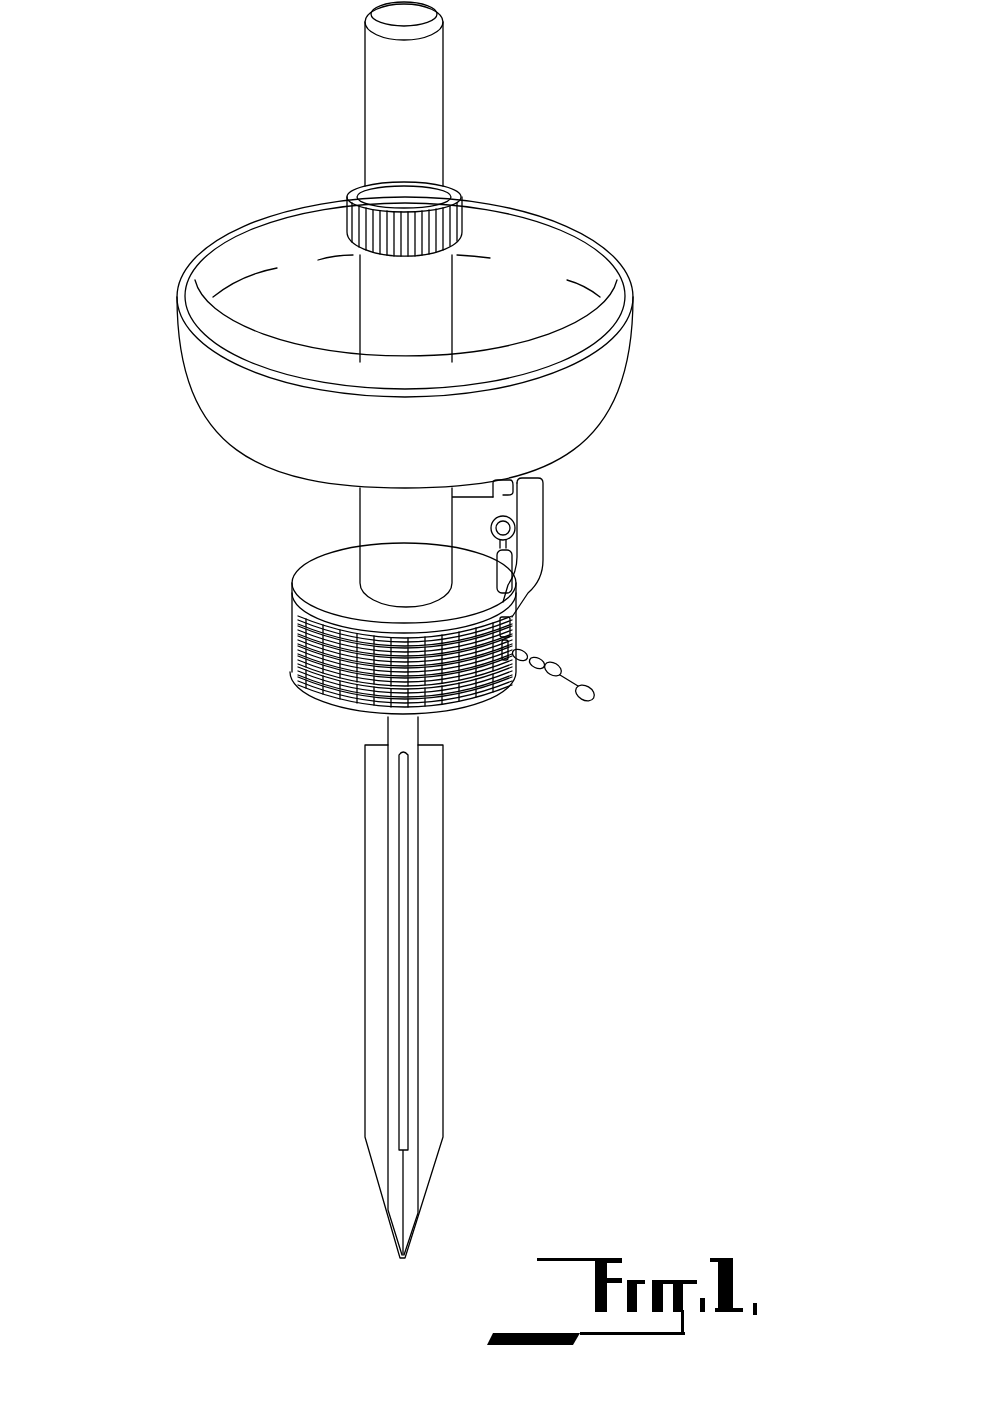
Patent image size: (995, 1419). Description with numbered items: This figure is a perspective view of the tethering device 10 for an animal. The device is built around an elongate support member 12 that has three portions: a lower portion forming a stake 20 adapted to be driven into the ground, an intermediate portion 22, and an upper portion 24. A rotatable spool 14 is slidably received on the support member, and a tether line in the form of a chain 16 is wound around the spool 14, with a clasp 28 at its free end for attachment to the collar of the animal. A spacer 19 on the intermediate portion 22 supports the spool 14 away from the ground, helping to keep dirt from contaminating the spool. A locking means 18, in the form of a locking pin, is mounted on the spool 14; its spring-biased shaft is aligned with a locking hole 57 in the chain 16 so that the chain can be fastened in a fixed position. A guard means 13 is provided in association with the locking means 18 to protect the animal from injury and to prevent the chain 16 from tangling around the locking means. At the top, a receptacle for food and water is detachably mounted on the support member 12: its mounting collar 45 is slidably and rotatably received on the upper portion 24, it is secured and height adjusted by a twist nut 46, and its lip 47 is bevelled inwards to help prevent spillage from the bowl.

The tethering device 10 is at (222, 535).
The support member 12 is at (442, 102).
The upper portion 24 is at (432, 59).
The twist nut 46 is at (453, 222).
The mounting collar 45 is at (437, 300).
The lip 47 is at (195, 258).
The intermediate portion 22 is at (372, 507).
The guard means 13 is at (532, 500).
The locking means 18 is at (522, 567).
The spool 14 is at (317, 585).
The chain 16 is at (300, 637).
The spacer 19 is at (378, 718).
The locking hole 57 is at (506, 668).
The clasp 28 is at (594, 690).
The stake 20 is at (430, 1040).